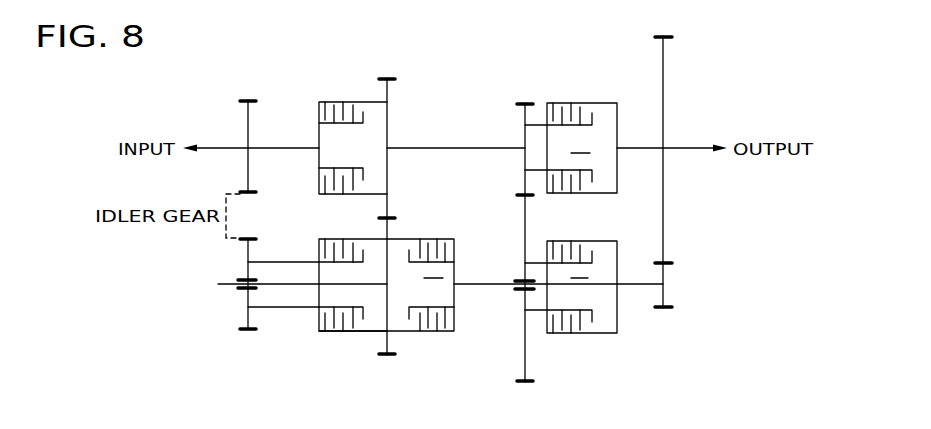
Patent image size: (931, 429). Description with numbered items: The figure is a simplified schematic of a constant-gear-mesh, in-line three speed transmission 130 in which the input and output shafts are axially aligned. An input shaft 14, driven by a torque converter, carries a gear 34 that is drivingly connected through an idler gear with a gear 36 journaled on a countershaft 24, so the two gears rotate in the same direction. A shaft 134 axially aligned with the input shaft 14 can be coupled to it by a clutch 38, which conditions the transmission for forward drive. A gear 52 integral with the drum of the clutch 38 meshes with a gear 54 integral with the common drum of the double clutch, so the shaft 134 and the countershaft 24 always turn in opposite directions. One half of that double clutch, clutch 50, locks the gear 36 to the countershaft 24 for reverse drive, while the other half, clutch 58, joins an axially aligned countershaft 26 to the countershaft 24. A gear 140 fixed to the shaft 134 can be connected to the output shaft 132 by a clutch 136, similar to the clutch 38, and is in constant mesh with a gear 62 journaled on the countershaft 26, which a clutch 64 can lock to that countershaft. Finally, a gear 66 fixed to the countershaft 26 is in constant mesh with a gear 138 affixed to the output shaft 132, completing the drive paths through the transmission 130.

The input shaft 14 is at (277, 149).
The countershaft 24 is at (290, 307).
The countershaft 26 is at (488, 290).
The gear 34 is at (246, 113).
The gear 36 is at (246, 250).
The clutch 38 is at (337, 94).
The clutch 50 is at (335, 231).
The gear 52 is at (392, 92).
The gear 54 is at (392, 222).
The clutch 58 is at (432, 234).
The gear 62 is at (524, 212).
The clutch 64 is at (582, 233).
The gear 66 is at (666, 276).
The transmission 130 is at (352, 354).
The output shaft 132 is at (690, 149).
The shaft 134 is at (448, 147).
The clutch 136 is at (569, 96).
The gear 138 is at (665, 83).
The gear 140 is at (524, 115).